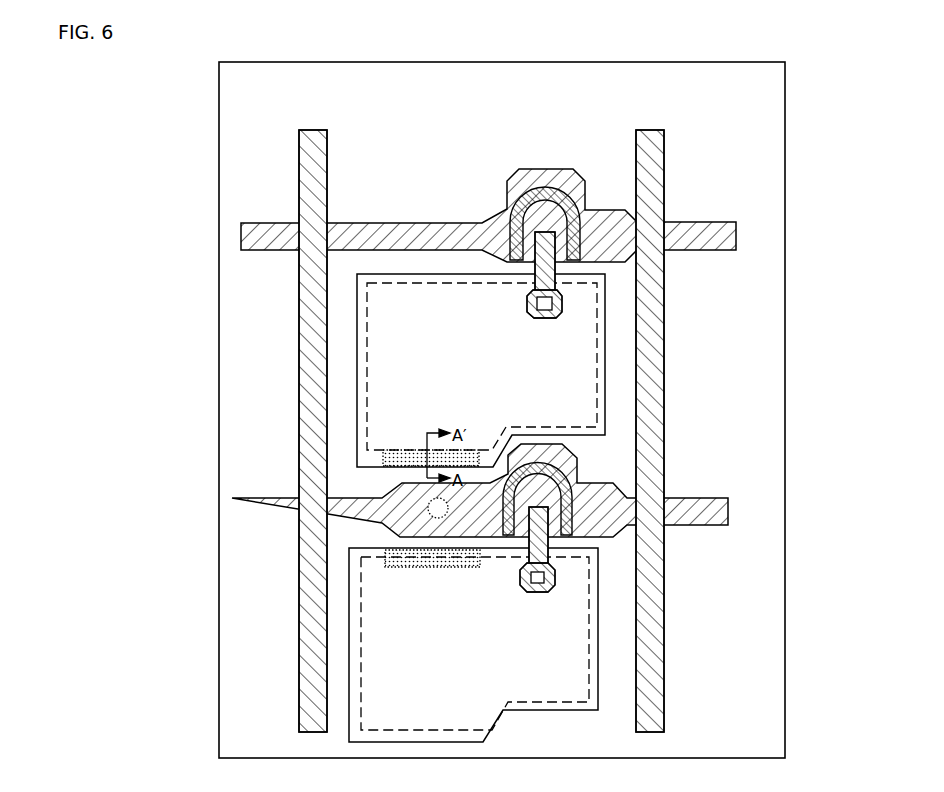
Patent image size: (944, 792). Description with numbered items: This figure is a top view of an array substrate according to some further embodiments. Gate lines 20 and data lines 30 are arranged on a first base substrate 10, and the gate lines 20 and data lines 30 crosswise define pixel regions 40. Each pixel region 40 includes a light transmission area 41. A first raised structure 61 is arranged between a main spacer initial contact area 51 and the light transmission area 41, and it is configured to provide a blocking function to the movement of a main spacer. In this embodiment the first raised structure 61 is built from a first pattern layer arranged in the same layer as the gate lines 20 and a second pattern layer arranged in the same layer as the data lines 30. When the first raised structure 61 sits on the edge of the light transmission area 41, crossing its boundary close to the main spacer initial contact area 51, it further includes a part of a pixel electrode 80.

The first base substrate 10 is at (772, 154).
The gate line 20 is at (712, 224).
The data line 30 is at (645, 143).
The pixel region 40 is at (620, 397).
The light transmission area 41 is at (597, 332).
The main spacer initial contact area 51 is at (428, 509).
The first raised structure 61 is at (455, 553).
The pixel electrode 80 is at (602, 620).